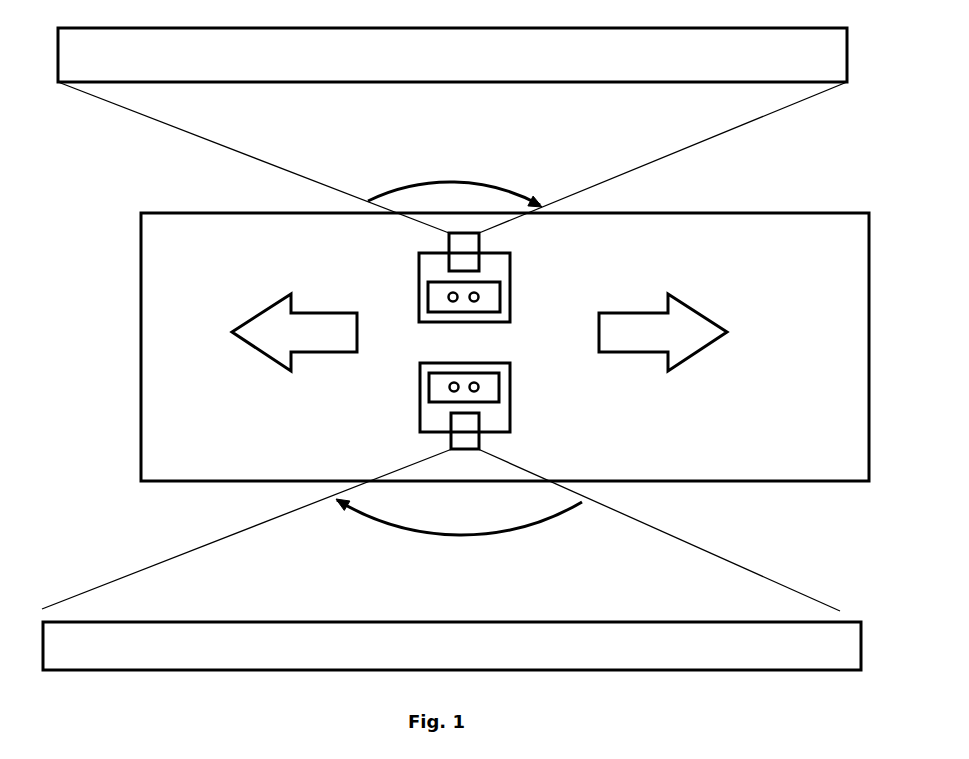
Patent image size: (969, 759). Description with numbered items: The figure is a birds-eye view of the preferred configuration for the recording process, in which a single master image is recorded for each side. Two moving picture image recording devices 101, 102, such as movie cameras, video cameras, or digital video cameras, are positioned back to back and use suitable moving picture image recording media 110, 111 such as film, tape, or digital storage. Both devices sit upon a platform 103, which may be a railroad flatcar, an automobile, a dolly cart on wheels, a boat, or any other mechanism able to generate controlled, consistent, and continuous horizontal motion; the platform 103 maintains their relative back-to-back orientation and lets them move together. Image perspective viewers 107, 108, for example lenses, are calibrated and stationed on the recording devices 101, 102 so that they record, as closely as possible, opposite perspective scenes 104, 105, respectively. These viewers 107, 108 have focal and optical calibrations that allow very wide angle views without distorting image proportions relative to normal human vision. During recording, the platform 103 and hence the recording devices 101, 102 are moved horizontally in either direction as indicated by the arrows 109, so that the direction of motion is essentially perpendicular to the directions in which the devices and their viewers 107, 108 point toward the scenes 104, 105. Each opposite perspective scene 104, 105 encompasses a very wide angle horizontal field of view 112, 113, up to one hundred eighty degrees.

The moving picture image recording device 101 is at (510, 282).
The moving picture image recording device 102 is at (510, 412).
The platform 103 is at (505, 347).
The opposite perspective scene 104 is at (418, 53).
The opposite perspective scene 105 is at (421, 651).
The image perspective viewer 107 is at (449, 241).
The image perspective viewer 108 is at (451, 440).
The arrows 109 is at (479, 332).
The moving picture image recording medium 110 is at (500, 302).
The moving picture image recording medium 111 is at (429, 381).
The horizontal field of view 112 is at (449, 182).
The horizontal field of view 113 is at (445, 535).